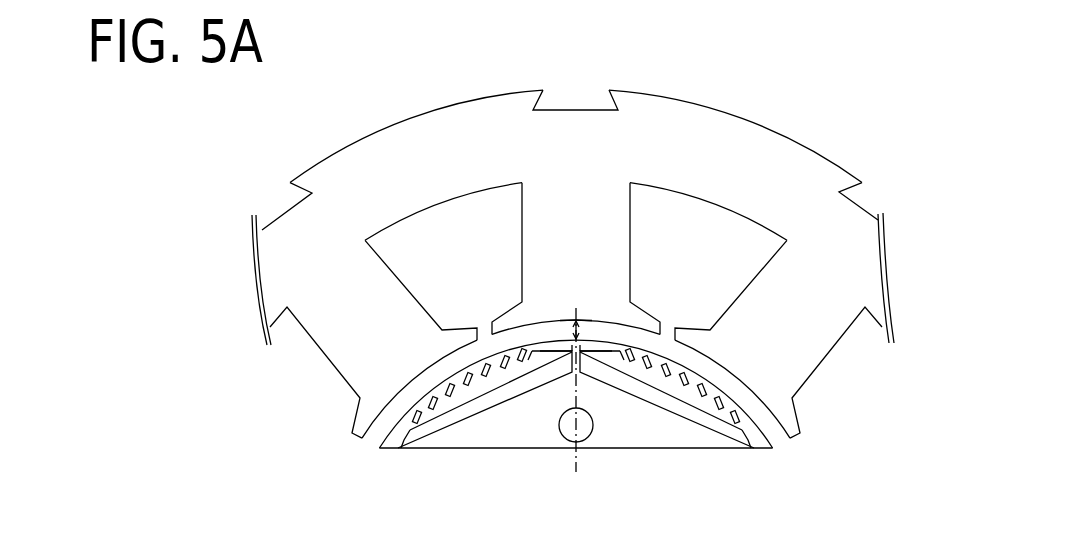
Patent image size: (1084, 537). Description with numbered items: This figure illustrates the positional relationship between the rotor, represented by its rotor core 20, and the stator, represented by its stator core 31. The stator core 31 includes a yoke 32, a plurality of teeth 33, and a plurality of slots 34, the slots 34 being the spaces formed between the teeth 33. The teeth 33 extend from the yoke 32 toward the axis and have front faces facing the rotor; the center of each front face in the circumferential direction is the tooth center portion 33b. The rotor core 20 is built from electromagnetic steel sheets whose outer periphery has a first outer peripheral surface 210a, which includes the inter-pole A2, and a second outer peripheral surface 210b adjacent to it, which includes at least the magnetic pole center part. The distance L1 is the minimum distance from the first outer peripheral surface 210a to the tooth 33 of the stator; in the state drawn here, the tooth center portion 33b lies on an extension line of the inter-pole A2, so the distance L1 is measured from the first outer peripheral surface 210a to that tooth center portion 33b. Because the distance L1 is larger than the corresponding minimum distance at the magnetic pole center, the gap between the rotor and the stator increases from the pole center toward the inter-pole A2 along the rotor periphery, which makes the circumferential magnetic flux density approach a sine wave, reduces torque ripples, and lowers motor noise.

The rotor core 20 is at (647, 418).
The stator core 31 is at (575, 110).
The yoke 32 is at (490, 137).
The teeth 33 is at (580, 230).
The tooth center portion 33b is at (578, 320).
The slots 34 is at (465, 252).
The first outer peripheral surface 210a is at (597, 340).
The second outer peripheral surface 210b is at (433, 377).
The distance L1 is at (572, 330).
The inter-pole A2 is at (575, 403).